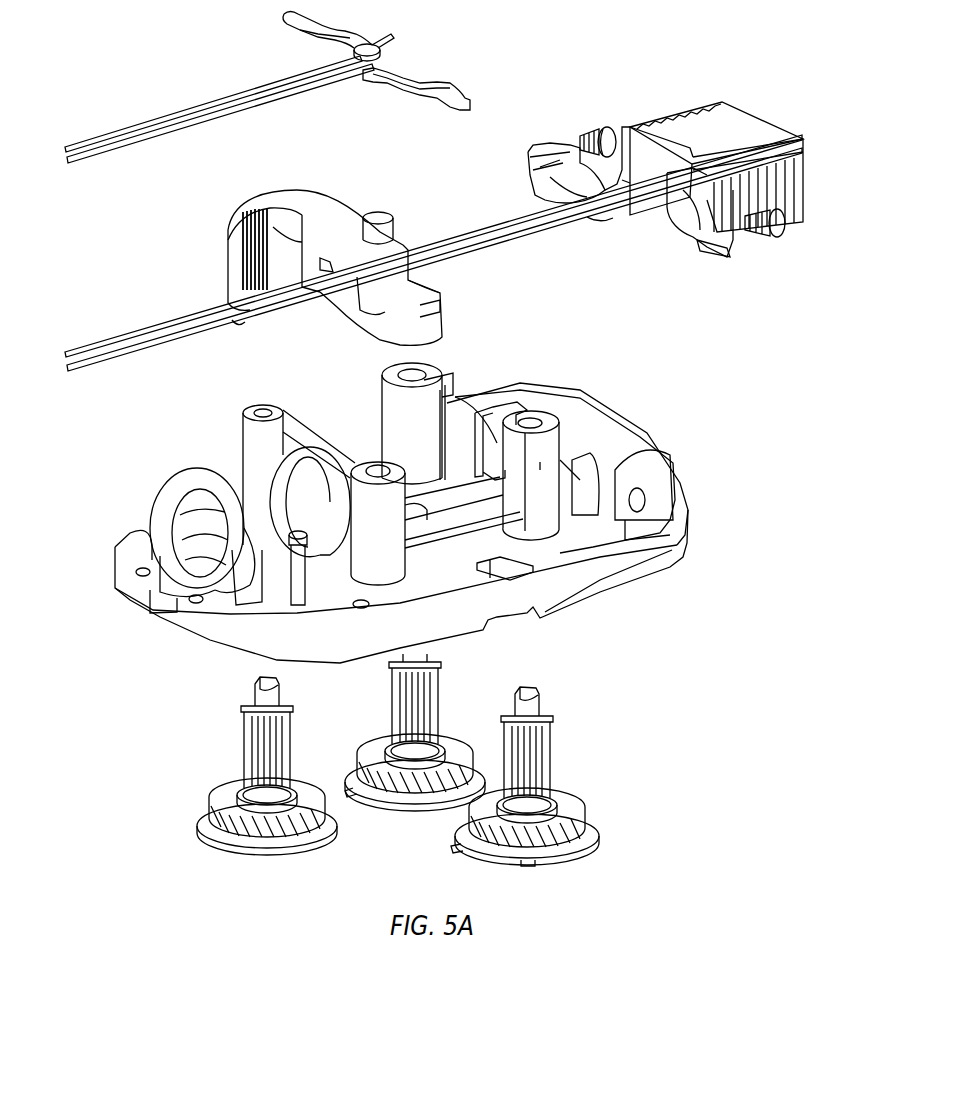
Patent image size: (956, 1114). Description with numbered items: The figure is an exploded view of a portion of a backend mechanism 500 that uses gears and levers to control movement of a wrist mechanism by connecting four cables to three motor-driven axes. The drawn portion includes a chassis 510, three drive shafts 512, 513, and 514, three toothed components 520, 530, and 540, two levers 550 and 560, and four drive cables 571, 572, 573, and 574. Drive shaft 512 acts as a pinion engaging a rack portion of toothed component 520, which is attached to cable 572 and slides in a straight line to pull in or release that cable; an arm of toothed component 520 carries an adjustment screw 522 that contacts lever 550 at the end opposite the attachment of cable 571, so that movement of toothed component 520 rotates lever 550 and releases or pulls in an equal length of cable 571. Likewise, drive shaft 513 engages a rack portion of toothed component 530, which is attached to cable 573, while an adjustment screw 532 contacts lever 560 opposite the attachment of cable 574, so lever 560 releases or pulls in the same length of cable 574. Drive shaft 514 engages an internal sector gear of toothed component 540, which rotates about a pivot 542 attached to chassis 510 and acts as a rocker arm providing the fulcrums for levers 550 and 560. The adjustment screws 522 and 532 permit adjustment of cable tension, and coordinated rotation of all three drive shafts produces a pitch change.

The backend mechanism 500 is at (724, 803).
The chassis 510 is at (678, 526).
The drive shaft 512 is at (580, 800).
The drive shaft 513 is at (453, 738).
The drive shaft 514 is at (218, 793).
The toothed component 520 is at (773, 135).
The adjustment screw 522 is at (763, 237).
The toothed component 530 is at (727, 117).
The adjustment screw 532 is at (587, 133).
The toothed component 540 is at (310, 193).
The pivot 542 is at (380, 213).
The lever 550 is at (442, 82).
The lever 560 is at (322, 24).
The drive cable 571 is at (150, 136).
The drive cable 572 is at (503, 245).
The drive cable 573 is at (513, 216).
The drive cable 574 is at (145, 126).